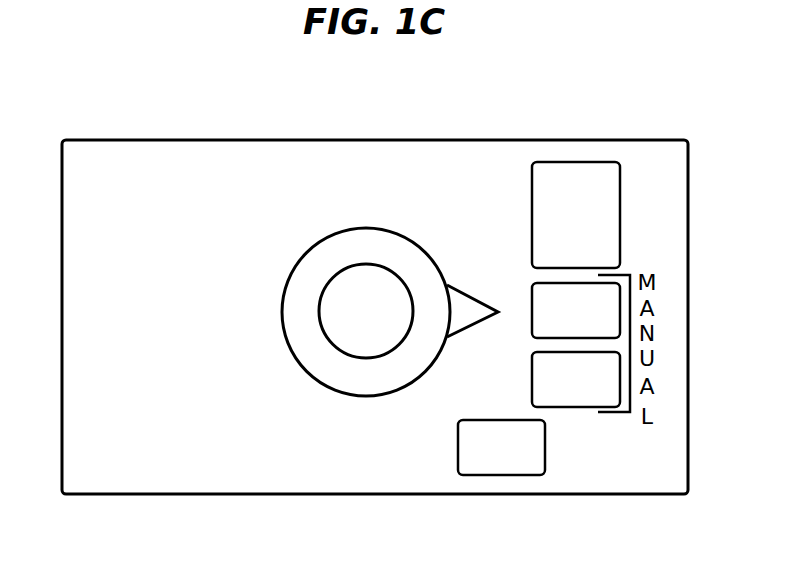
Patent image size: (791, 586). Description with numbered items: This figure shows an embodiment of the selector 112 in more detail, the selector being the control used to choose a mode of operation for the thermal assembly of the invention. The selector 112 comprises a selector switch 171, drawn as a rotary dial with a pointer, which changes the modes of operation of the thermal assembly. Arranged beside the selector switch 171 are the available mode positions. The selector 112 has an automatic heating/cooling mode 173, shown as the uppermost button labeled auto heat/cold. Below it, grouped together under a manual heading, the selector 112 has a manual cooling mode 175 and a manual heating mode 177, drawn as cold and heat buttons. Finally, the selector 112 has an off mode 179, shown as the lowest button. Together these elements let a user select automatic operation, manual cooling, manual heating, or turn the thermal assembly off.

The selector 112 is at (249, 140).
The selector switch 171 is at (303, 255).
The automatic heating/cooling mode 173 is at (532, 183).
The manual cooling mode 175 is at (532, 298).
The manual heating mode 177 is at (532, 380).
The off mode 179 is at (458, 448).